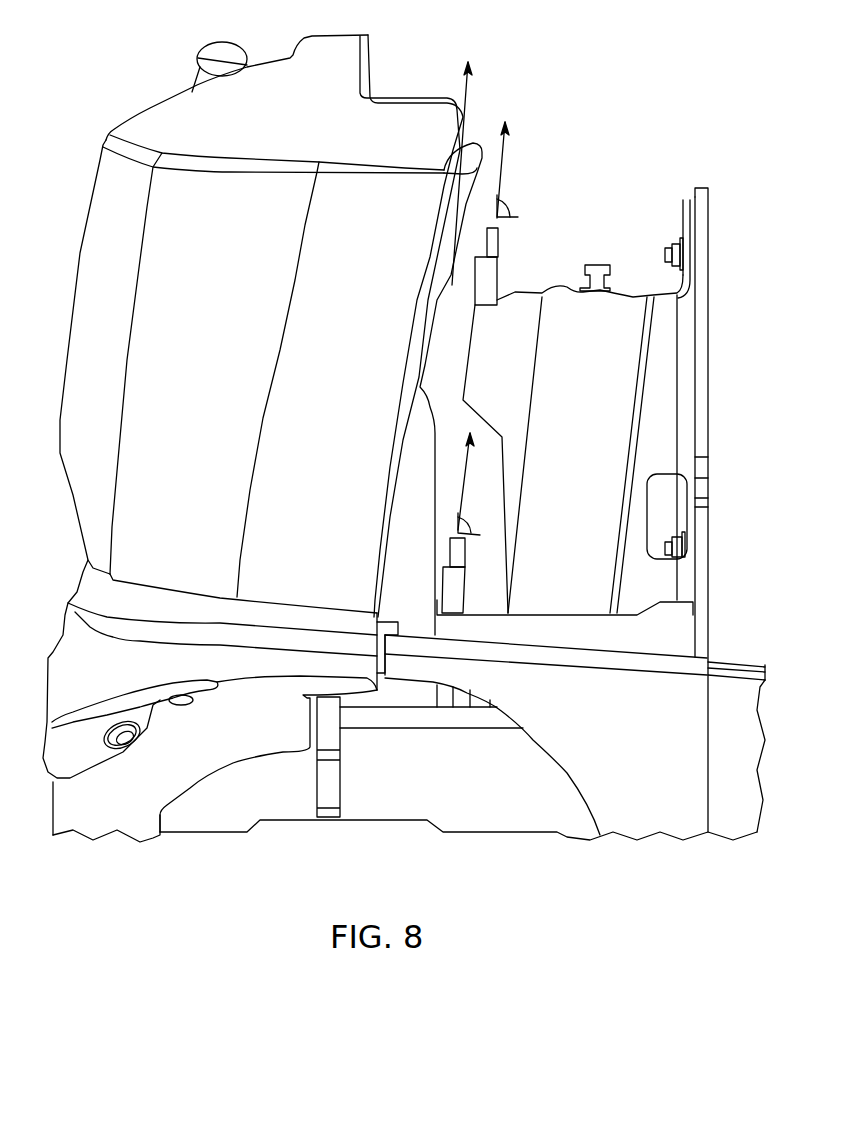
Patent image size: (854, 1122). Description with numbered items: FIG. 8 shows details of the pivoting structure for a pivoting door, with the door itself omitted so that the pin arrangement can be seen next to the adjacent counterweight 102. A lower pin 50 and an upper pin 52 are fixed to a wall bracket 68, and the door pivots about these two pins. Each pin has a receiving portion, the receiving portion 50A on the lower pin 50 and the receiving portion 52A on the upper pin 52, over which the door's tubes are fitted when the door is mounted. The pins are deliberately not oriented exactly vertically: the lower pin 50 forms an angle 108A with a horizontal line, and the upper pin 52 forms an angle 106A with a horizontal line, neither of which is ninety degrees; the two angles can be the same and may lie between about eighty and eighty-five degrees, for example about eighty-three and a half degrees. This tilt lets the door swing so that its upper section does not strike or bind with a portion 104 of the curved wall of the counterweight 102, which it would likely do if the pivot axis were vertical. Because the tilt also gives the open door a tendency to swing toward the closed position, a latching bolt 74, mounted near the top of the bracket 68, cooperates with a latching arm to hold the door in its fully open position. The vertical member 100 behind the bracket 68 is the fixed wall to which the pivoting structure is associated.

The counterweight 102 is at (277, 78).
The portion of the counterweight 104 is at (405, 193).
The angle 106A is at (508, 207).
The receiving portion 52A is at (492, 247).
The upper pin 52 is at (492, 277).
The latching bolt 74 is at (594, 267).
The wall bracket 68 is at (600, 422).
The support wall 100 is at (707, 405).
The angle 108A is at (475, 528).
The receiving portion 50A is at (457, 555).
The lower pin 50 is at (453, 598).